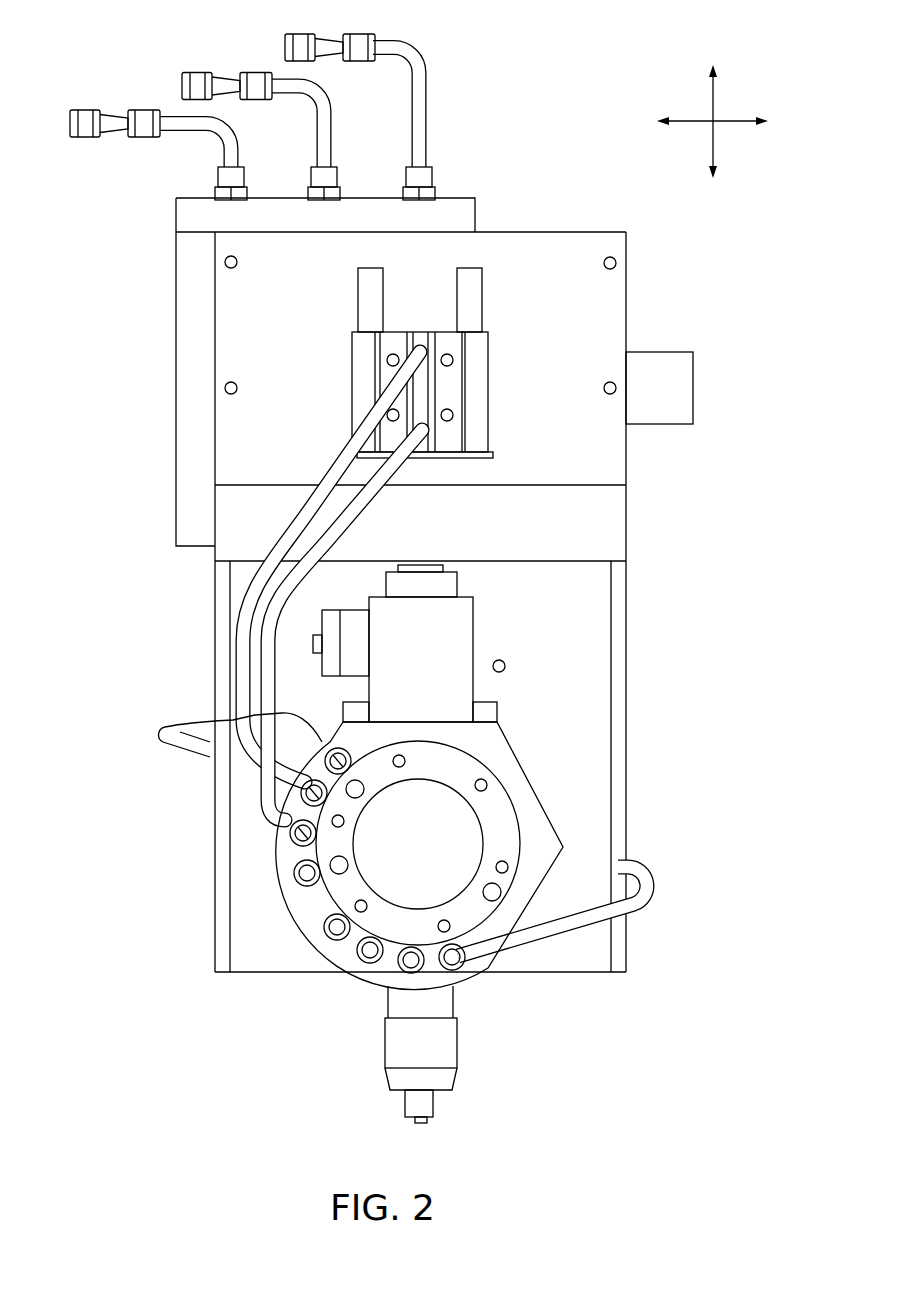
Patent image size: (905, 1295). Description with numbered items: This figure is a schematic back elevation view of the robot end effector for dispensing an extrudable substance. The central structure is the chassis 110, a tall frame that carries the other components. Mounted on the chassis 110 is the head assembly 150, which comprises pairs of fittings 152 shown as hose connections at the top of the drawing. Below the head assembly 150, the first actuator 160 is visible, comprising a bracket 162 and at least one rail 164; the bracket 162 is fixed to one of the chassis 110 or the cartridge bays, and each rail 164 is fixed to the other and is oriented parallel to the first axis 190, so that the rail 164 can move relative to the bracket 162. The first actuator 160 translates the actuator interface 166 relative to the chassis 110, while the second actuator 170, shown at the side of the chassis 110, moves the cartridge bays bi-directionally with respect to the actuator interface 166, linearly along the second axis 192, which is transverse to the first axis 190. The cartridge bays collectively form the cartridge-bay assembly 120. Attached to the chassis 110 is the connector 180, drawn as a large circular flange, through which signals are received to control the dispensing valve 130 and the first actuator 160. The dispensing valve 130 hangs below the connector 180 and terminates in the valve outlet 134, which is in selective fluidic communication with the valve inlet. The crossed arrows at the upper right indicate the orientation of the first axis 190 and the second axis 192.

The chassis 110 is at (626, 780).
The cartridge-bay assembly 120 is at (176, 313).
The dispensing valve 130 is at (457, 1048).
The valve outlet 134 is at (440, 1133).
The head assembly 150 is at (176, 216).
The pairs of fittings 152 is at (434, 180).
The first actuator 160 is at (490, 372).
The bracket 162 is at (490, 430).
The rail 164 is at (357, 305).
The actuator interface 166 is at (628, 262).
The second actuator 170 is at (693, 392).
The connector 180 is at (523, 742).
The first axis 190 is at (712, 90).
The second axis 192 is at (735, 118).